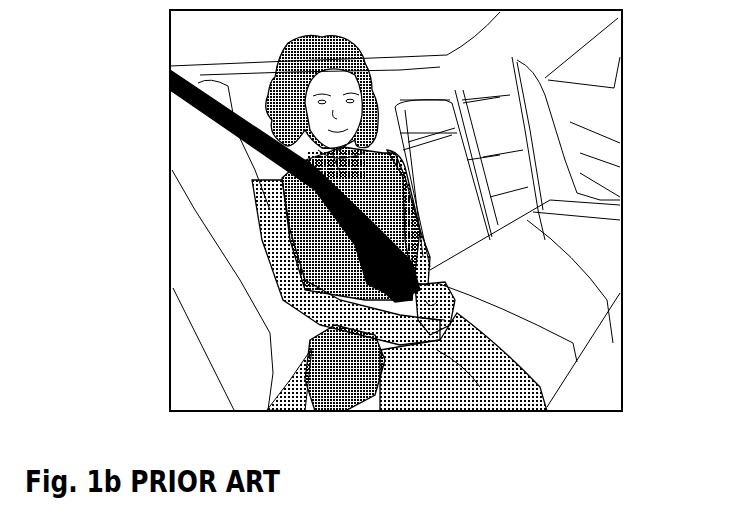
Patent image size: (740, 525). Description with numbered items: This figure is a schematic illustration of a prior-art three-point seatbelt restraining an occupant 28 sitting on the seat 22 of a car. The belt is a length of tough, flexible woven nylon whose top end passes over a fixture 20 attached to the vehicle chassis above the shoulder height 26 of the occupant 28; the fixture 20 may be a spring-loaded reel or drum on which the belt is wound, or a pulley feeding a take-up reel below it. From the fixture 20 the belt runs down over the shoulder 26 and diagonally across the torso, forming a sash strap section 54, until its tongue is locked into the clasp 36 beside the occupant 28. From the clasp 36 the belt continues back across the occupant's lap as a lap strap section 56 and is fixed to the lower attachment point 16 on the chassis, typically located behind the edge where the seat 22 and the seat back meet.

The lower attachment point 16 is at (310, 347).
The fixture 20 is at (527, 38).
The seat 22 is at (528, 342).
The shoulder 26 is at (265, 187).
The occupant 28 is at (380, 83).
The clasp 36 is at (477, 267).
The sash strap section 54 is at (297, 190).
The lap strap section 56 is at (363, 280).